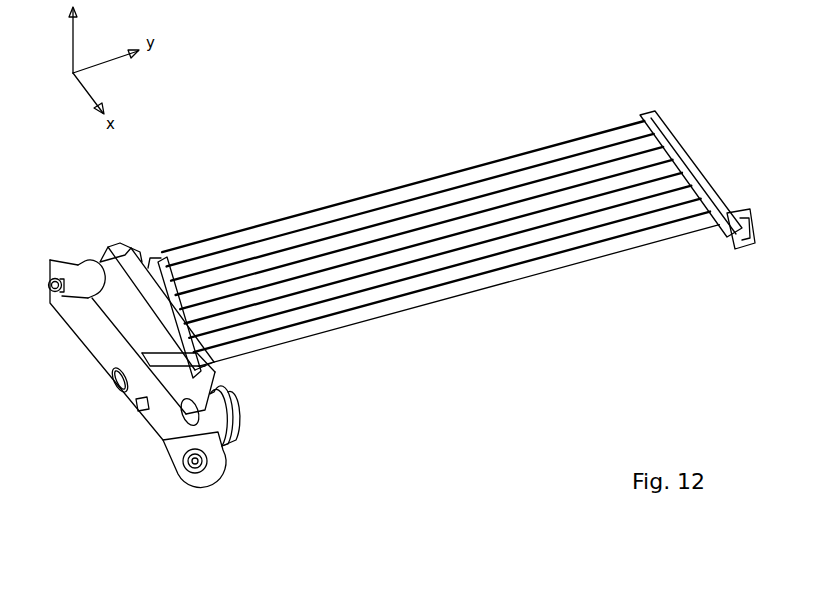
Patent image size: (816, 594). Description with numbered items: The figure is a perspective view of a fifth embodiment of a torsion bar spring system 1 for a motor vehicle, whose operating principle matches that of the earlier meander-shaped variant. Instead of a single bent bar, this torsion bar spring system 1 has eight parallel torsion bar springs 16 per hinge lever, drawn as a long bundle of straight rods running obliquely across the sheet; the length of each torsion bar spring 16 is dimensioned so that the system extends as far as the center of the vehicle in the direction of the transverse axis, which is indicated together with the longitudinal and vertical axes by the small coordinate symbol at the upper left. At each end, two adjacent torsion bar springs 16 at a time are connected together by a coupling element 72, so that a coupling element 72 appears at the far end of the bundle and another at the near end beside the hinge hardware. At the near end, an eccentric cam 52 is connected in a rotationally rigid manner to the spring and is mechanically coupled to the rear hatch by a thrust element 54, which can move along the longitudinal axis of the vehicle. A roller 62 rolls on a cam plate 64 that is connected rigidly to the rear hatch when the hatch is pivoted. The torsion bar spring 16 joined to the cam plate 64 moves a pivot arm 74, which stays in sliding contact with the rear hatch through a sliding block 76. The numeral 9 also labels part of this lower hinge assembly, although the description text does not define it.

The torsion bar spring system 1 is at (388, 176).
The frame 9 is at (148, 482).
The torsion bar spring 16 is at (437, 292).
The eccentric cam 52 is at (82, 268).
The thrust element 54 is at (114, 278).
The roller 62 is at (233, 418).
The cam plate 64 is at (200, 375).
The coupling element 72 is at (674, 160).
The pivot arm 74 is at (158, 420).
The sliding block 76 is at (177, 443).